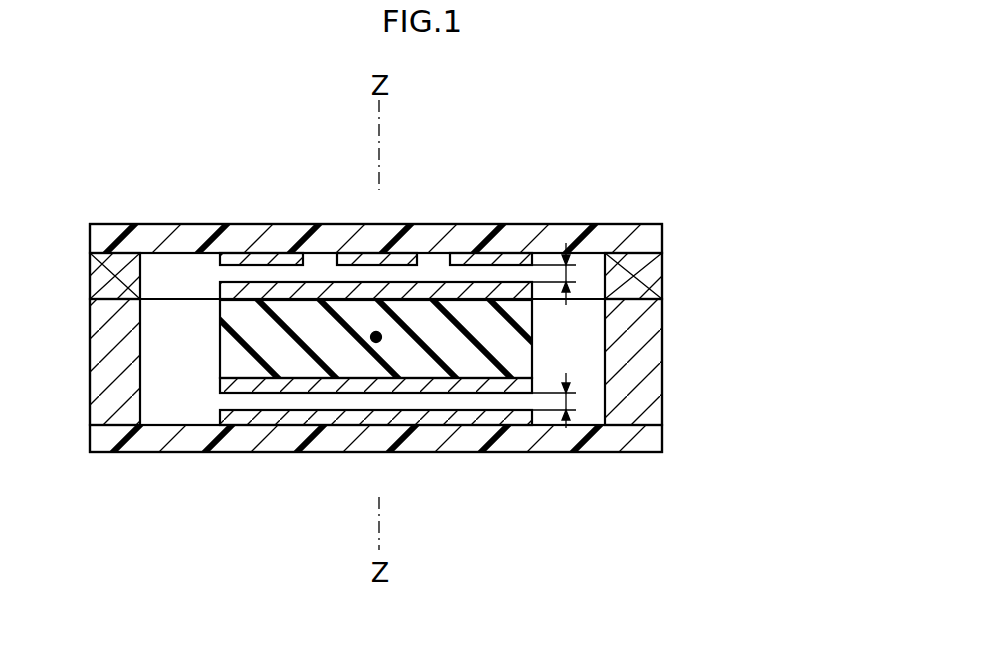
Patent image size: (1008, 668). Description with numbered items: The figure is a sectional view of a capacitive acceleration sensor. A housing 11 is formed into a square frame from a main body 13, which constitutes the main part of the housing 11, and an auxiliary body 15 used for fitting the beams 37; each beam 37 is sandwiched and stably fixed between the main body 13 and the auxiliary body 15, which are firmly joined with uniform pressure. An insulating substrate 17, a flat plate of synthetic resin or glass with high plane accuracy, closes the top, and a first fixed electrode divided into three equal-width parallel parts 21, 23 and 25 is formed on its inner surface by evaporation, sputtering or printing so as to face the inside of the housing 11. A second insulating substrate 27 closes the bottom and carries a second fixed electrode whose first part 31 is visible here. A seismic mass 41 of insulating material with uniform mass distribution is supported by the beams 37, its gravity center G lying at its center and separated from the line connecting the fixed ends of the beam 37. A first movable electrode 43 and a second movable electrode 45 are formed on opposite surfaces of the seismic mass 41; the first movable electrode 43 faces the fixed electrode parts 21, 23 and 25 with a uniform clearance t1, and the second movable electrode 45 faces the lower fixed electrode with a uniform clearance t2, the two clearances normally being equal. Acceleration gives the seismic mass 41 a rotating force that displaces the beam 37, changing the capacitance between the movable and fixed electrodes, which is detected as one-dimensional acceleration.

The housing 11 is at (801, 248).
The main body 13 is at (653, 338).
The auxiliary body 15 is at (653, 268).
The insulating substrate 17 is at (657, 237).
The insulating substrate 27 is at (655, 438).
The first part of first fixed electrode 21 is at (237, 263).
The second part of first fixed electrode 23 is at (357, 260).
The third part of first fixed electrode 25 is at (462, 258).
The first part of second fixed electrode 31 is at (440, 415).
The beam 37 is at (172, 302).
The seismic mass 41 is at (468, 365).
The first movable electrode 43 is at (230, 293).
The second movable electrode 45 is at (230, 387).
The gravity center G is at (376, 340).
The clearance t1 is at (572, 426).
The clearance t2 is at (578, 268).